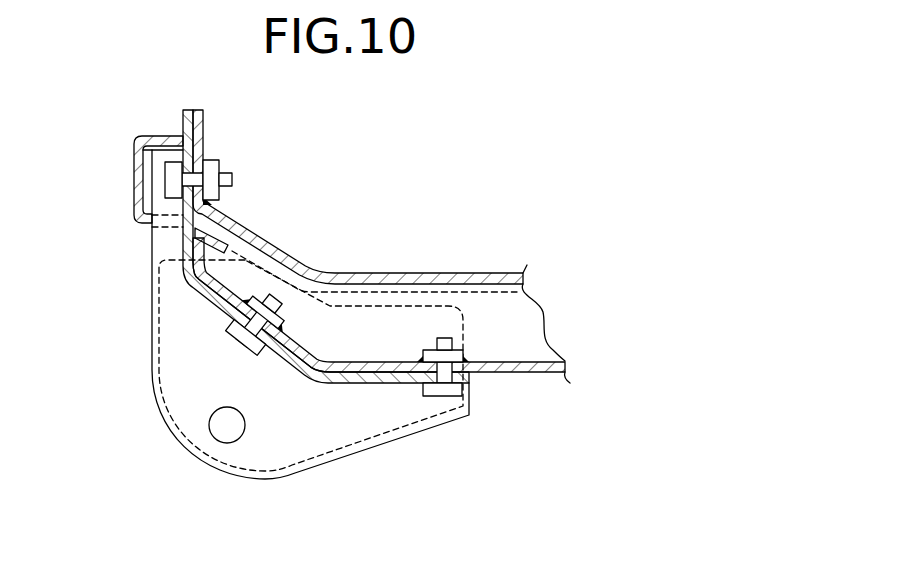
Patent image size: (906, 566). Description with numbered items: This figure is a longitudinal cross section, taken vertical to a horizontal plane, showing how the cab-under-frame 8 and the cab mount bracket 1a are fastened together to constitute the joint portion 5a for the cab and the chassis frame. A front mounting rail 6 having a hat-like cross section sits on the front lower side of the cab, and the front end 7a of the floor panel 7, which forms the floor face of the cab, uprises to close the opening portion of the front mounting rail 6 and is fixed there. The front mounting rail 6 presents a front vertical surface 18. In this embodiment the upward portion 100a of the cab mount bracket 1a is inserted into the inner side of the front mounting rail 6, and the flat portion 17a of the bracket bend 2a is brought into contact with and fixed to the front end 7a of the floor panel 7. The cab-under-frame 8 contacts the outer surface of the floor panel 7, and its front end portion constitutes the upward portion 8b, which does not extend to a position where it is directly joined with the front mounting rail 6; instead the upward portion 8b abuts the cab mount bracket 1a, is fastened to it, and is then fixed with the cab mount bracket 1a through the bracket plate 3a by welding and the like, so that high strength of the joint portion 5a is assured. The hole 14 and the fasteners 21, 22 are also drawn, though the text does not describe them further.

The cab mount bracket 1a is at (216, 476).
The bracket bend 2a is at (423, 443).
The bracket plate 3a is at (463, 328).
The joint portion 5a is at (368, 517).
The front mounting rail 6 is at (133, 220).
The floor panel 7 is at (479, 273).
The front end 7a is at (203, 141).
The cab-under-frame 8 is at (527, 352).
The upward portion 8b is at (272, 252).
The hole 14 is at (227, 427).
The flat portion 17a is at (207, 202).
The front vertical surface 18 is at (134, 152).
The nut 21 is at (157, 168).
The bolt 22 is at (220, 167).
The upward portion 100a is at (158, 183).